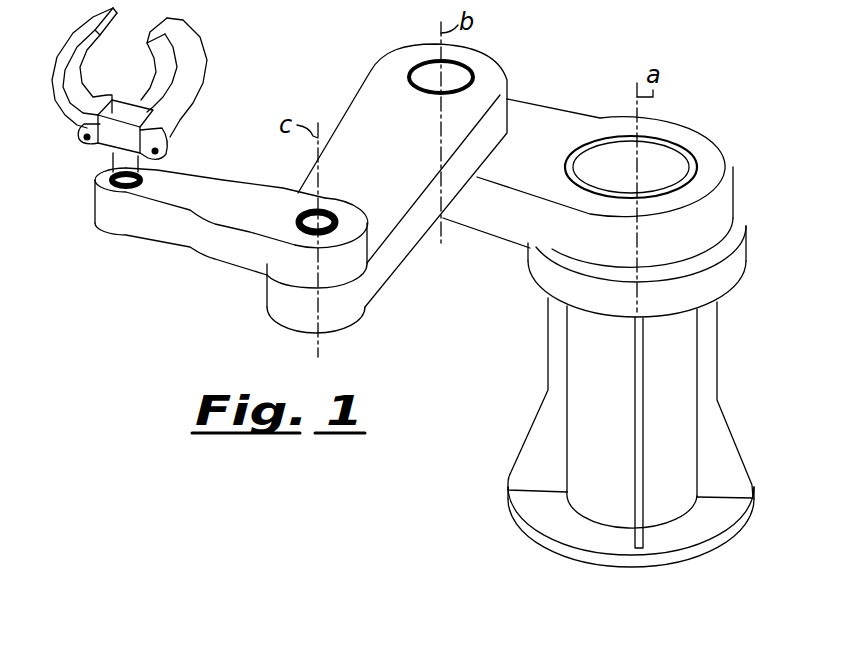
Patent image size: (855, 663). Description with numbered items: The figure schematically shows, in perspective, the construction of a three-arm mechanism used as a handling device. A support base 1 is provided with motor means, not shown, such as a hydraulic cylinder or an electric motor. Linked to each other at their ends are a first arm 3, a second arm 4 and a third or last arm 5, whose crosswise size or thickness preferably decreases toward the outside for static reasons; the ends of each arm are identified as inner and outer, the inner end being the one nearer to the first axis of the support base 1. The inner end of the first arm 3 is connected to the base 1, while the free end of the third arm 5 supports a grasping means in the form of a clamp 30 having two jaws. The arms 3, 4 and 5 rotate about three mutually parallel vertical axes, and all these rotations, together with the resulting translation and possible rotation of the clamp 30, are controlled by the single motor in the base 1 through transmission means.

The support base 1 is at (707, 364).
The first arm 3 is at (548, 113).
The second arm 4 is at (413, 198).
The third arm 5 is at (227, 257).
The clamp 30 is at (197, 67).